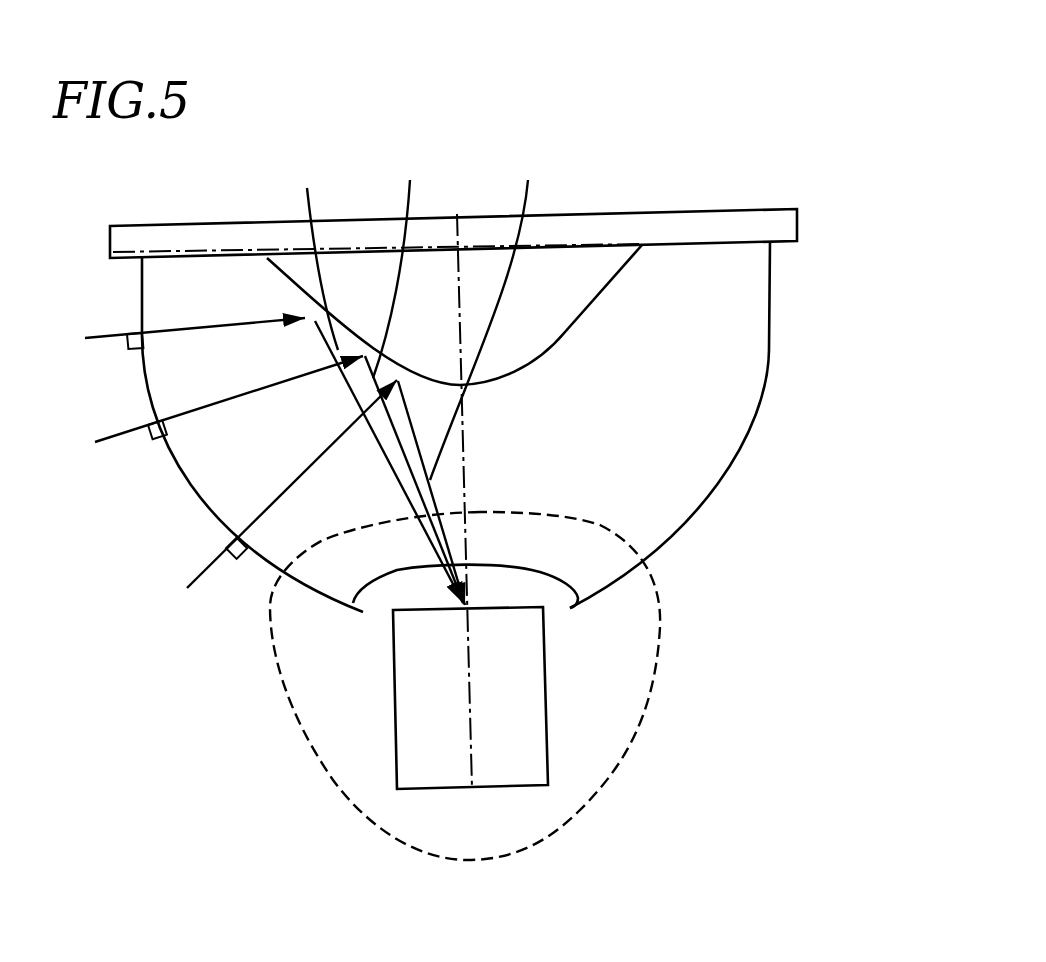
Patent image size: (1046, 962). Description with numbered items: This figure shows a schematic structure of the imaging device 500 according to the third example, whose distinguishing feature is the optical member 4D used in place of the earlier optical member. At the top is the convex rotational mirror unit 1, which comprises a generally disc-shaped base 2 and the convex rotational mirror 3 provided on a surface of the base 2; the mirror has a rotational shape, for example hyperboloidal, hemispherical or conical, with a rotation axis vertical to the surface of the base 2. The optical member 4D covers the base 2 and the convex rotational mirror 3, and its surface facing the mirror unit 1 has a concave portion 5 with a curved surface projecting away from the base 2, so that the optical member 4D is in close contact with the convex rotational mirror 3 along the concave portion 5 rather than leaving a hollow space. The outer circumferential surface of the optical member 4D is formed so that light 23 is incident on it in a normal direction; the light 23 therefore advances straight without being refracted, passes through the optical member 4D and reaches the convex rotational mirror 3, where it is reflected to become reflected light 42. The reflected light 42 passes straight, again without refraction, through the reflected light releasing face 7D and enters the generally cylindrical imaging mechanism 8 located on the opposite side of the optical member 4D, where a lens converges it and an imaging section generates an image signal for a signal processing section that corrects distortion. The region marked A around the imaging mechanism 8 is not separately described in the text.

The imaging device 500 is at (754, 130).
The convex rotational mirror unit 1 is at (858, 203).
The base 2 is at (797, 224).
The convex rotational mirror 3 is at (582, 280).
The concave portion 5 is at (570, 328).
The reflected light 42 is at (419, 310).
The light 23 is at (100, 337).
The reflected light releasing face 7D is at (388, 578).
The imaging mechanism 8 is at (393, 745).
The optical member 4D is at (752, 587).
The region A is at (697, 660).